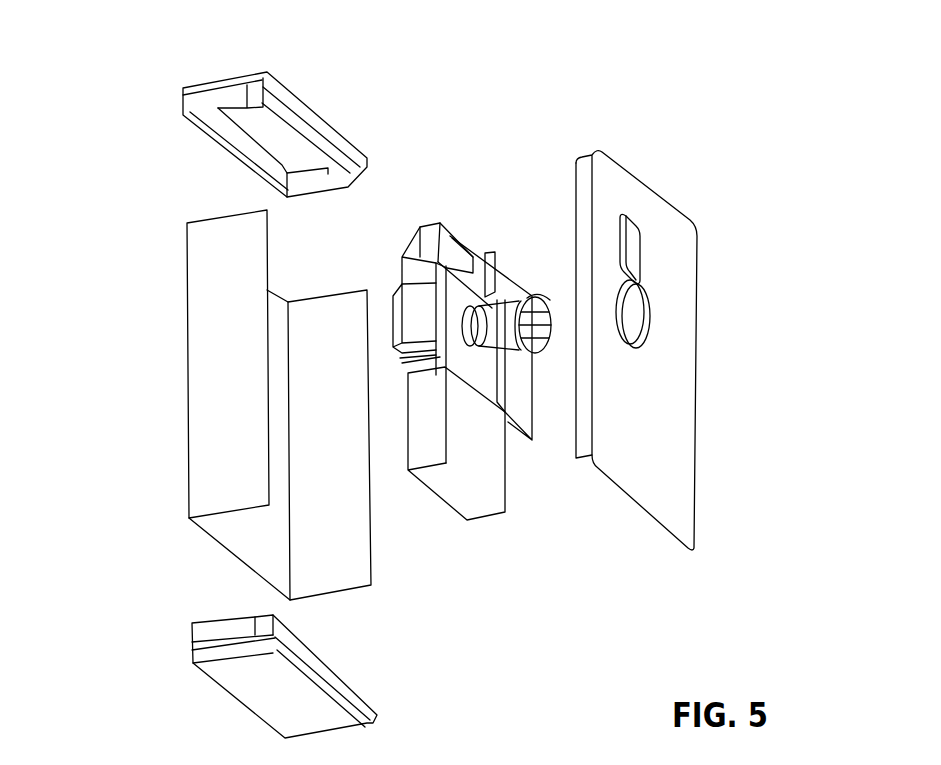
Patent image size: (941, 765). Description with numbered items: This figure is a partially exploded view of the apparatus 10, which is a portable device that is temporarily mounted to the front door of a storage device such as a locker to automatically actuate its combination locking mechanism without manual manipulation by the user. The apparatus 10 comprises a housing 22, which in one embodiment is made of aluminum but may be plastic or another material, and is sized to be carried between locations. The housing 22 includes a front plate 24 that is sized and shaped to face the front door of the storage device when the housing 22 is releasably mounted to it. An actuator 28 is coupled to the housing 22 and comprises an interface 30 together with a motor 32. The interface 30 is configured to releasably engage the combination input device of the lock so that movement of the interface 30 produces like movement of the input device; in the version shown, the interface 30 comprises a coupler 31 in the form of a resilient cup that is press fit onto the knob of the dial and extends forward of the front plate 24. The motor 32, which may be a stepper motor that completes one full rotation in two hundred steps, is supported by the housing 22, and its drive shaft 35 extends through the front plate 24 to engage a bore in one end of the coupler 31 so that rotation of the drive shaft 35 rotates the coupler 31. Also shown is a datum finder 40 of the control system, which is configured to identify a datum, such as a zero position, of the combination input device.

The apparatus 10 is at (839, 107).
The housing 22 is at (122, 63).
The front plate 24 is at (638, 192).
The actuator 28 is at (384, 295).
The interface 30 is at (566, 348).
The coupler 31 is at (525, 312).
The motor 32 is at (408, 337).
The drive shaft 35 is at (478, 337).
The datum finder 40 is at (431, 248).